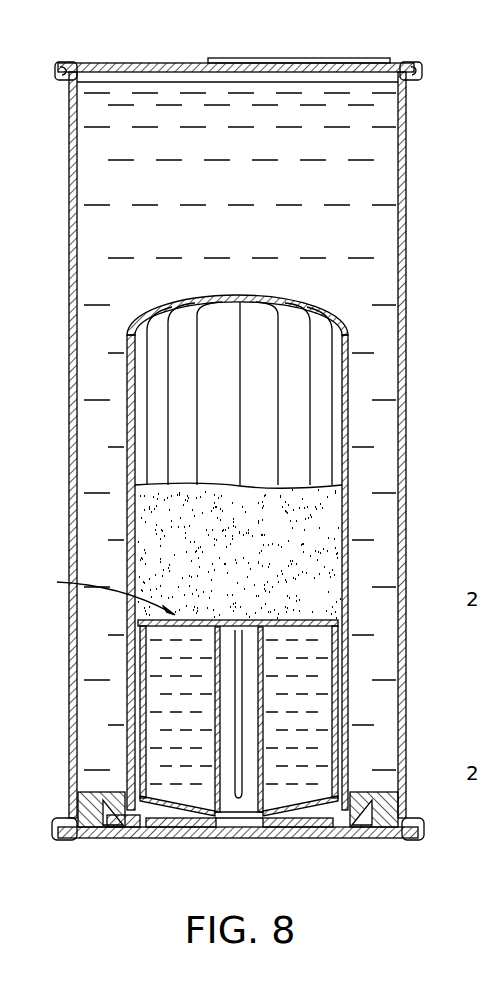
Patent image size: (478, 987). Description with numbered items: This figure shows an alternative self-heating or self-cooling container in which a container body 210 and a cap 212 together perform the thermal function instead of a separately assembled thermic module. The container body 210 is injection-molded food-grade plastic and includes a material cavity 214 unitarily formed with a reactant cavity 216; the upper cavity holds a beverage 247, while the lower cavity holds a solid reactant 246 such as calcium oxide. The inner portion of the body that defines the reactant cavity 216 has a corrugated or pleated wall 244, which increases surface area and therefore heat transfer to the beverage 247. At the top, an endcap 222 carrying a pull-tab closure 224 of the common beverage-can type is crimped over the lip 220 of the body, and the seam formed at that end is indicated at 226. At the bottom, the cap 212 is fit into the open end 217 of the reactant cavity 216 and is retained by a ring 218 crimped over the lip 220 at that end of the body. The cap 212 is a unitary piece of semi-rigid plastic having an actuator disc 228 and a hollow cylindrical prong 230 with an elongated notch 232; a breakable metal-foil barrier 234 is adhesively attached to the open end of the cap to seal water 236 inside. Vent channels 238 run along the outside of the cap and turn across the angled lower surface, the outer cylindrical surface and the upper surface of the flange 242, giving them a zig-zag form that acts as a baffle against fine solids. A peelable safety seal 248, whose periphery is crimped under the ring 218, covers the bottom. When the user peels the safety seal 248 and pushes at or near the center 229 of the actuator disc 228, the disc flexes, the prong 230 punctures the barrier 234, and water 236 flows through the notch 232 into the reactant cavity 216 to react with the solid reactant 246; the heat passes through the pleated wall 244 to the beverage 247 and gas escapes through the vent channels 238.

The container body 210 is at (405, 262).
The cap 212 is at (98, 592).
The material cavity 214 is at (108, 237).
The reactant cavity 216 is at (148, 397).
The open end 217 is at (377, 812).
The ring 218 is at (383, 838).
The lip 220 is at (68, 813).
The endcap 222 is at (167, 63).
The pull-tab closure 224 is at (308, 58).
The top seam 226 is at (70, 70).
The actuator disc 228 is at (300, 823).
The center 229 is at (250, 840).
The cylindrical prong 230 is at (212, 697).
The elongated notch 232 is at (242, 717).
The breakable barrier 234 is at (305, 621).
The water 236 is at (323, 707).
The vent channels 238 is at (143, 680).
The flange 242 is at (105, 827).
The pleated wall 244 is at (352, 368).
The solid reactant 246 is at (325, 522).
The beverage 247 is at (255, 154).
The safety seal 248 is at (205, 827).